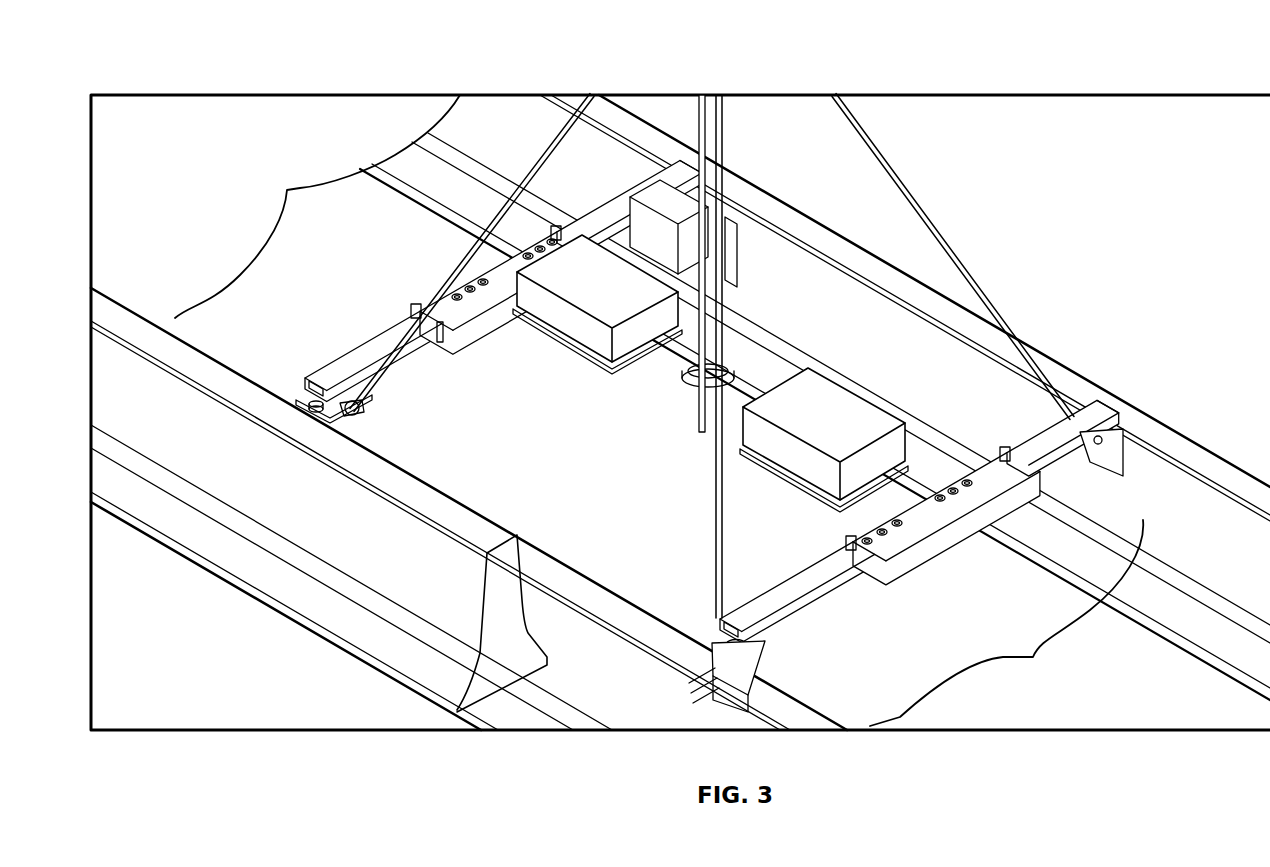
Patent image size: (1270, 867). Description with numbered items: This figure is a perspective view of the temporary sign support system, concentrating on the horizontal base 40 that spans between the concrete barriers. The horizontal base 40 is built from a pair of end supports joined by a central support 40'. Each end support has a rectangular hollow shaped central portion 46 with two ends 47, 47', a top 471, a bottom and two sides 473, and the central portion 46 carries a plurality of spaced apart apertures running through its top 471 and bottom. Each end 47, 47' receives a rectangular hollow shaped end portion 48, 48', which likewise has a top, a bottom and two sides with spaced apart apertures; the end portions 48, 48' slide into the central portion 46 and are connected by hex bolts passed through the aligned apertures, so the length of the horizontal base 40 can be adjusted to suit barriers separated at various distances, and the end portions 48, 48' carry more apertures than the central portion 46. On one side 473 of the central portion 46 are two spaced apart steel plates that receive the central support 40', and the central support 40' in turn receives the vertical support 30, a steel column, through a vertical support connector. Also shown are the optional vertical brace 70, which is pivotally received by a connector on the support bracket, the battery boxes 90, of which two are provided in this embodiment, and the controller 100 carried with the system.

The vertical support 30 is at (692, 369).
The horizontal base 40 is at (680, 412).
The central support 40' is at (649, 439).
The central portion 46 is at (477, 264).
The end 47 is at (613, 470).
The end 47' is at (805, 352).
The end portion 48 is at (583, 512).
The end portion 48' is at (851, 285).
The vertical brace 70 is at (515, 158).
The battery box 90 is at (622, 295).
The controller 100 is at (666, 238).
The top 471 is at (930, 500).
The side 473 is at (462, 327).